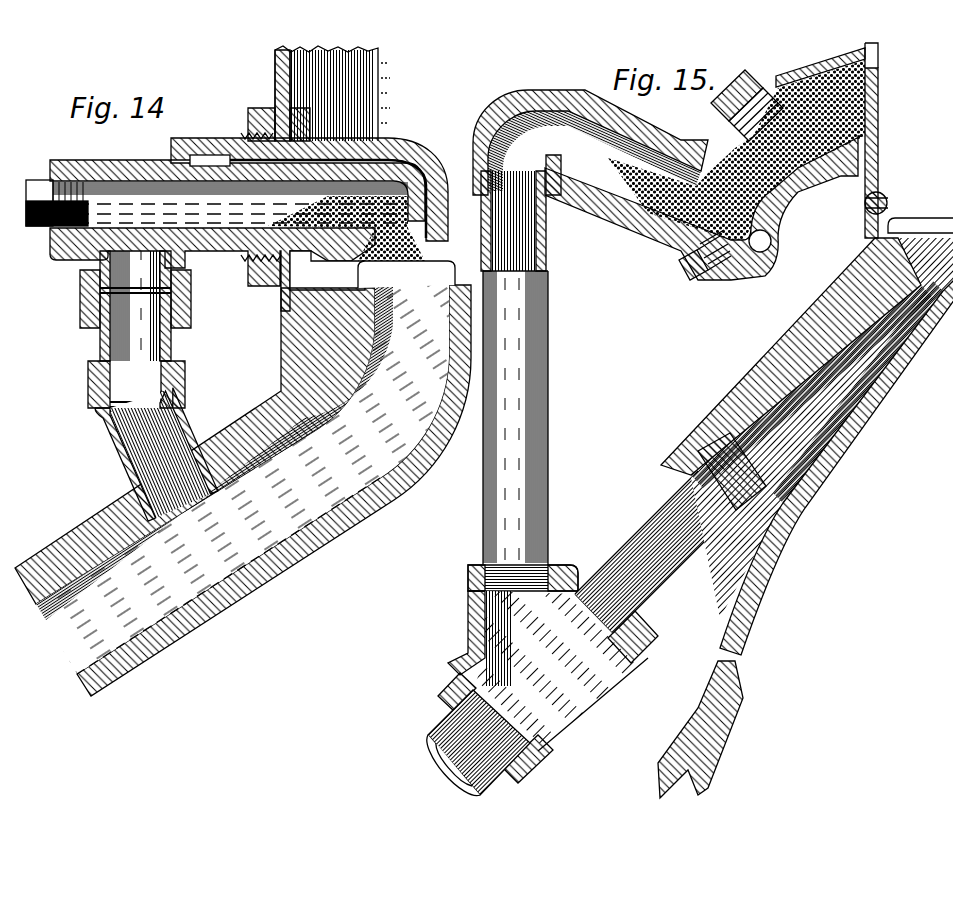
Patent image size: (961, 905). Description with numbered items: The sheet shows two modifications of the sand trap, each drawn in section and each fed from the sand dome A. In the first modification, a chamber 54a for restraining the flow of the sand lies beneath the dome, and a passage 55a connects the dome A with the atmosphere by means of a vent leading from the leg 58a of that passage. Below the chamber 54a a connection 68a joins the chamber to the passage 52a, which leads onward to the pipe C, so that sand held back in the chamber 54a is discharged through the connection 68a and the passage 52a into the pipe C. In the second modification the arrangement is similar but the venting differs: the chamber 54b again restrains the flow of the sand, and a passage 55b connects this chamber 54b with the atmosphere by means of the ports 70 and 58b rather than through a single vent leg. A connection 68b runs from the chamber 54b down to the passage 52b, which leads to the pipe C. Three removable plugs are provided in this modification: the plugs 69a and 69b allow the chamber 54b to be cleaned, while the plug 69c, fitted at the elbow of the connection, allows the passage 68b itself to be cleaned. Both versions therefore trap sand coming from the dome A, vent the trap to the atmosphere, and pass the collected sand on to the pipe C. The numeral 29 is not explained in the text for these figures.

In FIG. 14, the feed pipe 29 is at (25, 216).
In FIG. 14, the passage 52a is at (307, 497).
In FIG. 15, the passage 52b is at (803, 417).
In FIG. 14, the chamber 54a is at (90, 207).
In FIG. 15, the chamber 54b is at (603, 165).
In FIG. 14, the passage 55a is at (407, 167).
In FIG. 15, the passage 55b is at (753, 245).
In FIG. 14, the leg 58a is at (182, 148).
In FIG. 15, the port 58b is at (847, 175).
In FIG. 14, the connection 68a is at (115, 330).
In FIG. 15, the connection 68b is at (527, 390).
In FIG. 15, the removable plug 69a is at (684, 268).
In FIG. 15, the removable plug 69b is at (728, 78).
In FIG. 15, the removable plug 69c is at (500, 97).
In FIG. 15, the port 70 is at (726, 268).
In FIG. 14, the sand dome A is at (340, 93).
In FIG. 15, the sand dome A is at (904, 142).
In FIG. 14, the pipe C is at (67, 645).
In FIG. 15, the pipe C is at (417, 743).